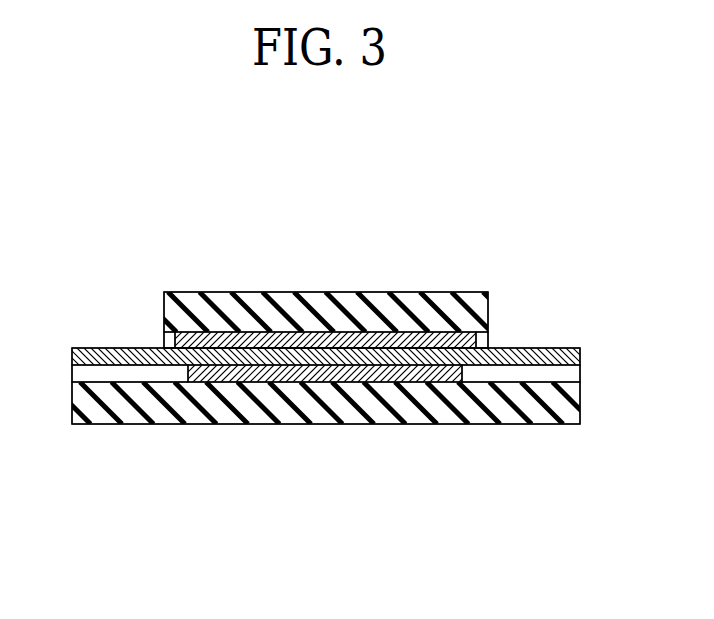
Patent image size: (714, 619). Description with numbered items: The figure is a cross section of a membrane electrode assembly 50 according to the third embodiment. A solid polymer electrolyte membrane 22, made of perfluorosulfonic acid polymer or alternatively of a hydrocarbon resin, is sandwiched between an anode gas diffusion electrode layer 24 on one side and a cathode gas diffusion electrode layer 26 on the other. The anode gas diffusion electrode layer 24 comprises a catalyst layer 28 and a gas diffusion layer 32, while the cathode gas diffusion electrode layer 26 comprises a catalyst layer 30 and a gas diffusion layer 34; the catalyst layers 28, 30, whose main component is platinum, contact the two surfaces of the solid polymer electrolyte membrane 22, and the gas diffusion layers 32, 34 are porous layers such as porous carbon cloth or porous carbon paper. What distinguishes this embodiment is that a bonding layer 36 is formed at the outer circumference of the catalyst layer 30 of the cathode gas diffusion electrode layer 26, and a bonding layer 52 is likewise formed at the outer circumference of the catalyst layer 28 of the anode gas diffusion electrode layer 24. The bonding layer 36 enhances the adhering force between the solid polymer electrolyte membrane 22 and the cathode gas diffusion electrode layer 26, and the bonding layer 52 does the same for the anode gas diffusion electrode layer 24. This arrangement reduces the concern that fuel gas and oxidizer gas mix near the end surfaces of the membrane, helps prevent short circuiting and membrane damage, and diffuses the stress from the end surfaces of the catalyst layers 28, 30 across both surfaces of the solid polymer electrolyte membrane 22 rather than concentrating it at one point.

The solid polymer electrolyte membrane 22 is at (88, 348).
The anode gas diffusion electrode layer 24 is at (273, 277).
The cathode gas diffusion electrode layer 26 is at (222, 450).
The catalyst layer 28 is at (410, 342).
The catalyst layer 30 is at (297, 377).
The gas diffusion layer 32 is at (308, 305).
The gas diffusion layer 34 is at (373, 407).
The bonding layer 36 is at (110, 377).
The membrane electrode assembly 50 is at (572, 252).
The bonding layer 52 is at (163, 344).